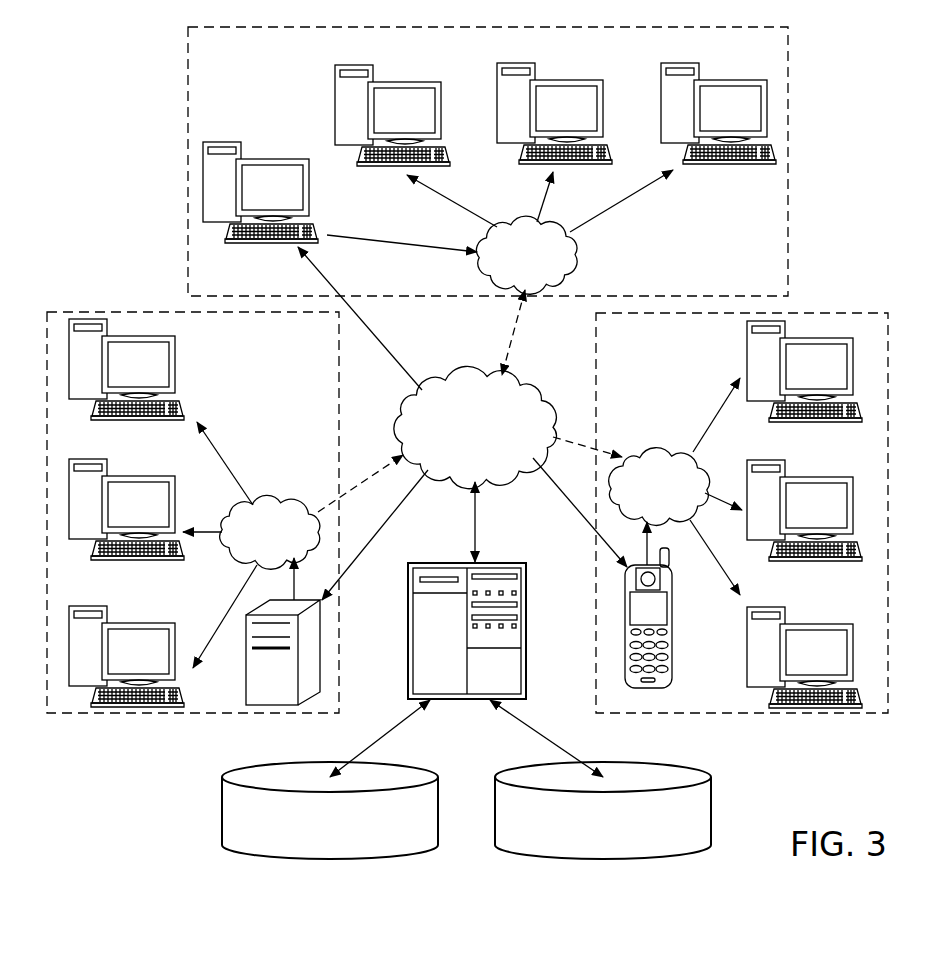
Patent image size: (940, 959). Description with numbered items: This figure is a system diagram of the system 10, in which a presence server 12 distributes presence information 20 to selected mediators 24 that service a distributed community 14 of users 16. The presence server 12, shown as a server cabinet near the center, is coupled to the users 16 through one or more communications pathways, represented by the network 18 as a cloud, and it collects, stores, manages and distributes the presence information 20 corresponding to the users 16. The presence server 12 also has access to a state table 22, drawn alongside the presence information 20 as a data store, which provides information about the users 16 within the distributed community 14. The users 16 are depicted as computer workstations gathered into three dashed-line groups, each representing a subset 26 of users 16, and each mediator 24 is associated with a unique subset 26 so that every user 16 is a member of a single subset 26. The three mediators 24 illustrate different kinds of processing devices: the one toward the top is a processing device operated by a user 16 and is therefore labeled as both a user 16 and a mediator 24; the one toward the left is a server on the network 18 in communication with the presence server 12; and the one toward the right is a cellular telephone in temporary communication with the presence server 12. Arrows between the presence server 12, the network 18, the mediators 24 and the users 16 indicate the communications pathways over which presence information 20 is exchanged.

The system 10 is at (92, 122).
The presence server 12 is at (448, 563).
The distributed community 14 is at (842, 142).
The user 16 is at (272, 158).
The network 18 is at (505, 482).
The presence information 20 is at (222, 822).
The state table 22 is at (712, 800).
The mediator 24 is at (274, 706).
The subset 26 is at (188, 62).